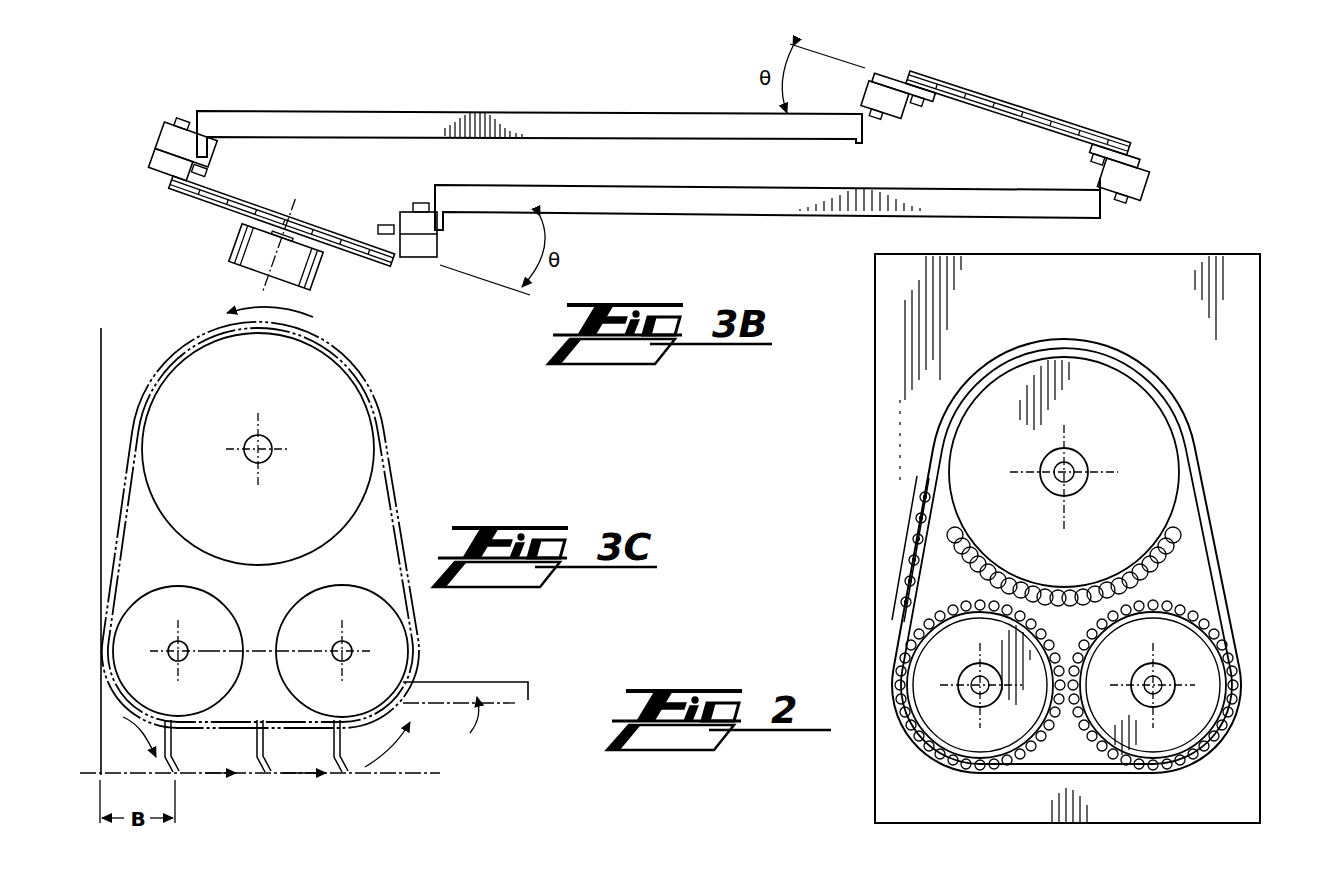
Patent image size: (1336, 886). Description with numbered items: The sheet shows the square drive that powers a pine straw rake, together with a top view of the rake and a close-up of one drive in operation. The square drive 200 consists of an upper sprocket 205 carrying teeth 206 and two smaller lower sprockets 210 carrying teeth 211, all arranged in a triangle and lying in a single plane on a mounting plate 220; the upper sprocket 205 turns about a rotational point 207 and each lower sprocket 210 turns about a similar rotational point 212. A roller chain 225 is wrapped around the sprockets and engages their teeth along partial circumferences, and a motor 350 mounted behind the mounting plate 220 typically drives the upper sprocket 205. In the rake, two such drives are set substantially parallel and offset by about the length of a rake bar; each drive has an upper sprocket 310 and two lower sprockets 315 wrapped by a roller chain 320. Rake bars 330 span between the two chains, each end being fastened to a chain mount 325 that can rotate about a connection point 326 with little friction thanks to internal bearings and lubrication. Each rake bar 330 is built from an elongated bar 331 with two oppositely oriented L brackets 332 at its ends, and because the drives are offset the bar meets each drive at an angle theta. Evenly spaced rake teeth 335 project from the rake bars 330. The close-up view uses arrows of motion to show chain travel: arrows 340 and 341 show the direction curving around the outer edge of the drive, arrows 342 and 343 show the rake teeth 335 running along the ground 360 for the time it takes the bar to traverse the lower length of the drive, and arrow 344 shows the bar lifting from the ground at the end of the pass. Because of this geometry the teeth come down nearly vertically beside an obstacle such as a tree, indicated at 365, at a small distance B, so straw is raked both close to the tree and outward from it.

In FIG. 2, the square drive 200 is at (1047, 490).
In FIG. 2, the upper sprocket 205 is at (1005, 412).
In FIG. 2, the teeth 206 is at (1205, 590).
In FIG. 2, the rotational point 207 is at (1074, 470).
In FIG. 2, the lower sprockets 210 is at (940, 660).
In FIG. 2, the teeth 211 is at (925, 605).
In FIG. 2, the rotational points 212 is at (975, 688).
In FIG. 2, the mounting plate 220 is at (890, 330).
In FIG. 2, the roller chain 225 is at (912, 590).
In FIG. 3C, the upper sprocket 310 is at (240, 389).
In FIG. 3C, the lower sprockets 315 is at (160, 613).
In FIG. 3B, the roller chain 320 is at (1068, 124).
In FIG. 3C, the roller chain 320 is at (410, 490).
In FIG. 3B, the chain mounts 325 is at (892, 78).
In FIG. 3B, the connection point 326 is at (183, 132).
In FIG. 3B, the rake bars 330 is at (431, 108).
In FIG. 3C, the rake bars 330 is at (472, 733).
In FIG. 3B, the elongated bar 331 is at (632, 120).
In FIG. 3B, the L brackets 332 is at (203, 112).
In FIG. 3C, the rake teeth 335 is at (447, 705).
In FIG. 3C, the arrow of motion 340 is at (248, 300).
In FIG. 3C, the arrow of motion 341 is at (130, 733).
In FIG. 3C, the arrow of motion 342 is at (215, 778).
In FIG. 3C, the arrow of motion 343 is at (297, 778).
In FIG. 3C, the arrow of motion 344 is at (400, 774).
In FIG. 3B, the motor 350 is at (318, 266).
In FIG. 3C, the ground 360 is at (424, 780).
In FIG. 3C, the reference line 365 is at (52, 524).